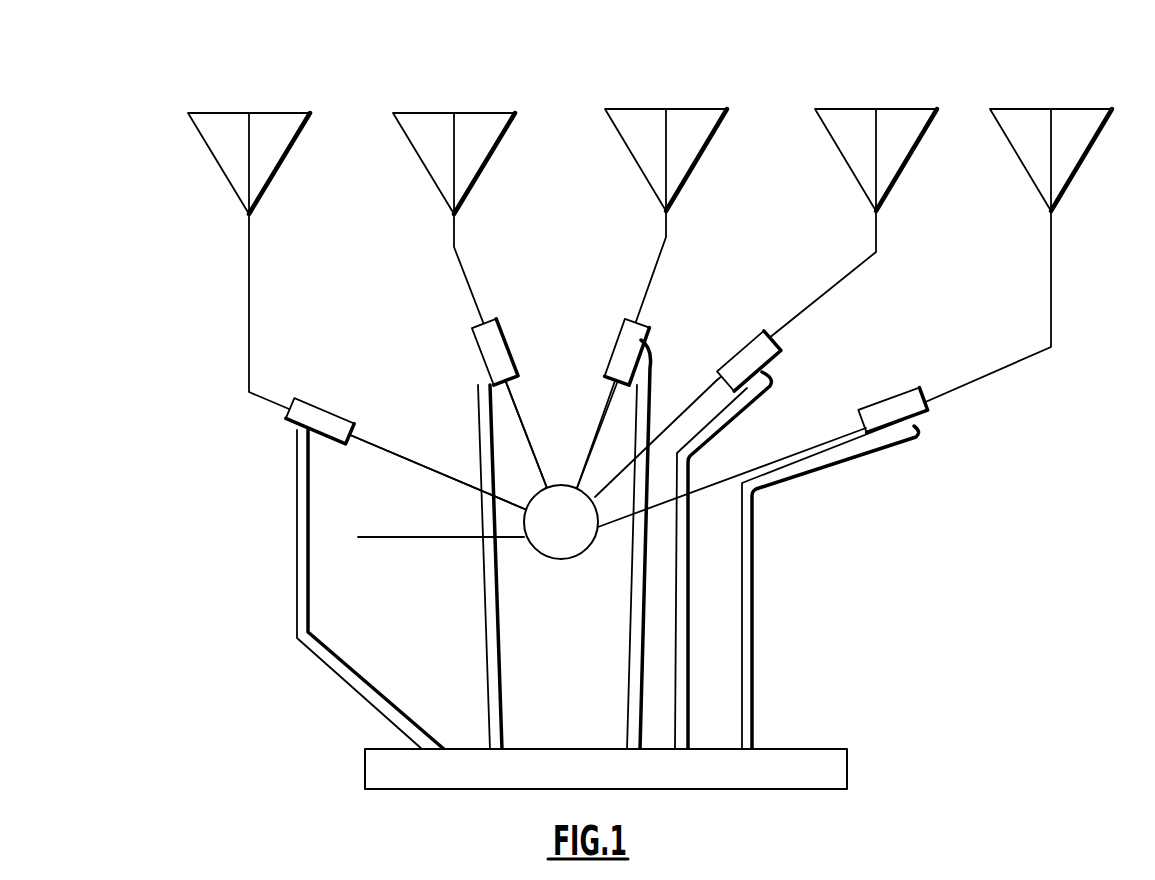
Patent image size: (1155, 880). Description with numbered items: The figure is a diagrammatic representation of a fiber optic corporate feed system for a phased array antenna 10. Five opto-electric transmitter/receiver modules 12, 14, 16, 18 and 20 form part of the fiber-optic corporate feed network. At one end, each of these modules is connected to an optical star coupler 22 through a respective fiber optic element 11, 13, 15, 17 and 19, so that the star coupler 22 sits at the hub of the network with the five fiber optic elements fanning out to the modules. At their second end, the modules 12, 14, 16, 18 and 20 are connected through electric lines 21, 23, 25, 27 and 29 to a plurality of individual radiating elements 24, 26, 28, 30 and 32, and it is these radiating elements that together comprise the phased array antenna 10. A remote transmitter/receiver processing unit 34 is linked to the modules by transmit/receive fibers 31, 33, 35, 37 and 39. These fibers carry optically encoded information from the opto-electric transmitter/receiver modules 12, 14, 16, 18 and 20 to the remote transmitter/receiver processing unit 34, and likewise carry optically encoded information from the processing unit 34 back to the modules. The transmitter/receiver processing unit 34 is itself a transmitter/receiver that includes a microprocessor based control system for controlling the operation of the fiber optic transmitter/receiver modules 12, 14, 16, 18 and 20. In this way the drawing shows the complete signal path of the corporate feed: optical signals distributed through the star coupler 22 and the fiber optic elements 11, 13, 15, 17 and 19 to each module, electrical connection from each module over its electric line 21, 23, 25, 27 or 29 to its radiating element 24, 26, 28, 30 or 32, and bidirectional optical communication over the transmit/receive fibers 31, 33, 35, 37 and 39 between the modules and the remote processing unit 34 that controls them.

The phased array antenna 10 is at (679, 98).
The fiber optic element 11 is at (388, 437).
The opto-electric transmitter/receiver module 12 is at (333, 406).
The fiber optic element 13 is at (513, 396).
The opto-electric transmitter/receiver module 14 is at (502, 326).
The fiber optic element 15 is at (590, 455).
The opto-electric transmitter/receiver module 16 is at (612, 351).
The fiber optic element 17 is at (698, 399).
The opto-electric transmitter/receiver module 18 is at (735, 345).
The fiber optic element 19 is at (850, 426).
The opto-electric transmitter/receiver module 20 is at (890, 394).
The electric line 21 is at (251, 300).
The optical star coupler 22 is at (558, 560).
The electric line 23 is at (456, 238).
The radiating element 24 is at (219, 173).
The electric line 25 is at (664, 236).
The radiating element 26 is at (423, 173).
The electric line 27 is at (830, 287).
The radiating element 28 is at (635, 169).
The electric line 29 is at (1051, 262).
The radiating element 30 is at (845, 169).
The transmit/receive fiber 31 is at (355, 697).
The radiating element 32 is at (1020, 169).
The transmit/receive fiber 33 is at (489, 652).
The transmitter/receiver processing unit 34 is at (848, 762).
The transmit/receive fiber 35 is at (630, 666).
The transmit/receive fiber 37 is at (674, 703).
The transmit/receive fiber 39 is at (740, 680).